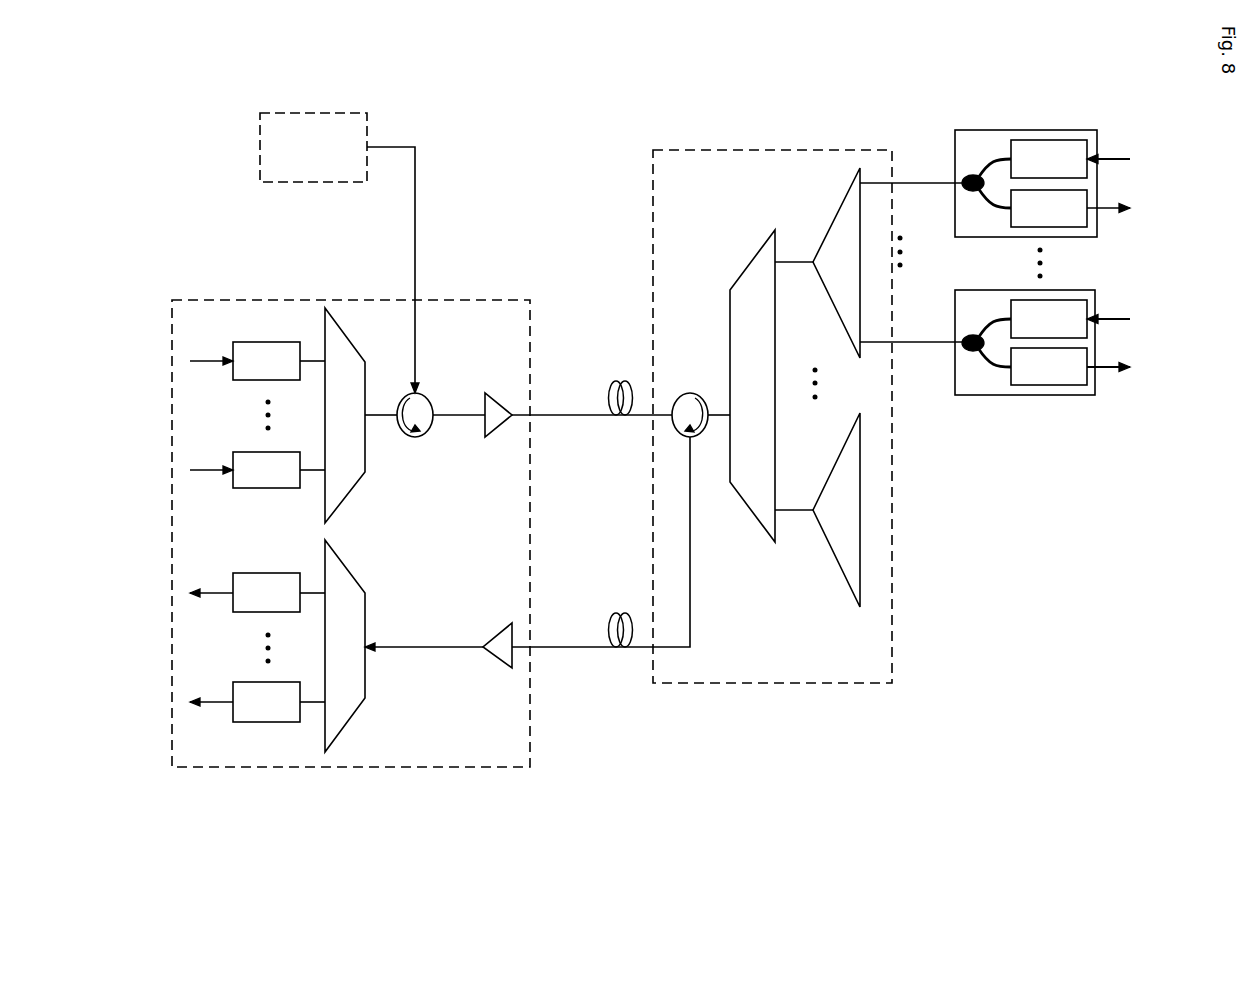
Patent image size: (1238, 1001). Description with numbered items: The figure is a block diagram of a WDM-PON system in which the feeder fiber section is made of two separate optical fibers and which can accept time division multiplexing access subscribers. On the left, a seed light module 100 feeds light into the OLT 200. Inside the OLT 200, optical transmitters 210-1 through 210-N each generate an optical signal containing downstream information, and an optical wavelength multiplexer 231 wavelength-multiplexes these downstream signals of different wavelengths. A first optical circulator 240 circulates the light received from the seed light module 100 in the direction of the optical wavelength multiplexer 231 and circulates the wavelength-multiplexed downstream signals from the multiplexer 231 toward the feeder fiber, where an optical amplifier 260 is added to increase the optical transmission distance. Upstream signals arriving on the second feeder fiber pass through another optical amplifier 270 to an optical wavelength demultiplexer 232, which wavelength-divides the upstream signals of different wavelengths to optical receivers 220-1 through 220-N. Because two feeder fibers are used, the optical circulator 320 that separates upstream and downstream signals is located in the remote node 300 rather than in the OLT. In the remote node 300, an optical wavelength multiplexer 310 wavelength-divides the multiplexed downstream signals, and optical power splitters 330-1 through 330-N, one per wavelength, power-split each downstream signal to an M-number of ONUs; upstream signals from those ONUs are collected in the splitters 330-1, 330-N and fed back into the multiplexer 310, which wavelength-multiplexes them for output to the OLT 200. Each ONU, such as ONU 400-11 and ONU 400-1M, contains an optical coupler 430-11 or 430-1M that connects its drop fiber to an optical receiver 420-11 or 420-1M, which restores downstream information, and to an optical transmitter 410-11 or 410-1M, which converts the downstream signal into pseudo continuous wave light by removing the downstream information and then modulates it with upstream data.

The seed light module 100 is at (335, 113).
The OLT 200 is at (172, 535).
The optical transmitter 210-1 is at (254, 342).
The optical transmitter 210-N is at (254, 452).
The optical receiver 220-1 is at (254, 573).
The optical receiver 220-N is at (254, 689).
The optical wavelength multiplexer 231 is at (350, 343).
The optical wavelength demultiplexer 232 is at (350, 573).
The first optical circulator 240 is at (413, 438).
The optical amplifier 260 is at (490, 398).
The optical amplifier 270 is at (490, 635).
The remote node 300 is at (805, 150).
The optical wavelength multiplexer 310 is at (745, 272).
The optical circulator 320 is at (690, 393).
The optical power splitter 330-1 is at (838, 214).
The optical power splitter 330-N is at (838, 564).
The ONU 400-11 is at (1031, 168).
The ONU 400-1M is at (1050, 342).
The optical transmitter 410-11 is at (1057, 140).
The optical transmitter 410-1M is at (1087, 303).
The optical receiver 420-11 is at (1087, 220).
The optical receiver 420-1M is at (1087, 378).
The optical coupler 430-11 is at (968, 177).
The optical coupler 430-1M is at (975, 352).